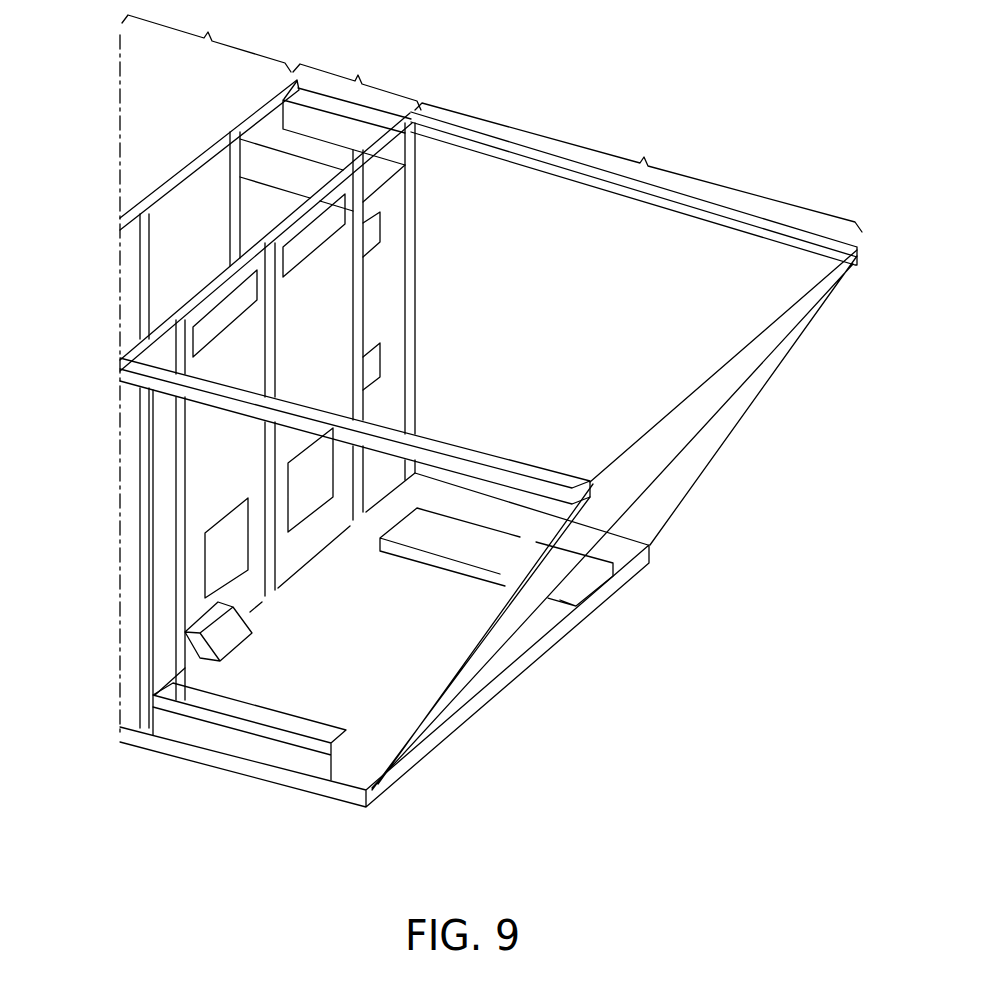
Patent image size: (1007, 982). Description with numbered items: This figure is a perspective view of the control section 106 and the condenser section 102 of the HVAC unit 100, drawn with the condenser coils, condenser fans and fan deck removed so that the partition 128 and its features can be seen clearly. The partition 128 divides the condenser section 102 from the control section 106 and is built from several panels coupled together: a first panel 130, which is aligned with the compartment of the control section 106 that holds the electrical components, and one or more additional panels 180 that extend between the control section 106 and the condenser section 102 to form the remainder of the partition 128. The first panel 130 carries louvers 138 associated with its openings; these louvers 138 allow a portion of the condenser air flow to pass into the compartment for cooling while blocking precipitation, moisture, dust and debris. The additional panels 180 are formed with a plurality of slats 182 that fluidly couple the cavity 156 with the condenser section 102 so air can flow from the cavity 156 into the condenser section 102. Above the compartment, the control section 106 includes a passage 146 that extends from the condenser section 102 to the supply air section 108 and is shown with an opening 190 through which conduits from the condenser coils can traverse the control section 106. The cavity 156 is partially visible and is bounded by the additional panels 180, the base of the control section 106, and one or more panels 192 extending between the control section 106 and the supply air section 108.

The HVAC unit 100 is at (620, 79).
The condenser section 102 is at (636, 184).
The control section 106 is at (357, 77).
The supply air section 108 is at (206, 38).
The partition 128 is at (168, 558).
The first panel 130 is at (395, 298).
The louvers 138 is at (380, 226).
The passage 146 is at (285, 128).
The cavity 156 is at (189, 241).
The additional panels 180 is at (297, 500).
The slats 182 is at (303, 247).
The opening 190 is at (386, 174).
The panels 192 is at (193, 195).